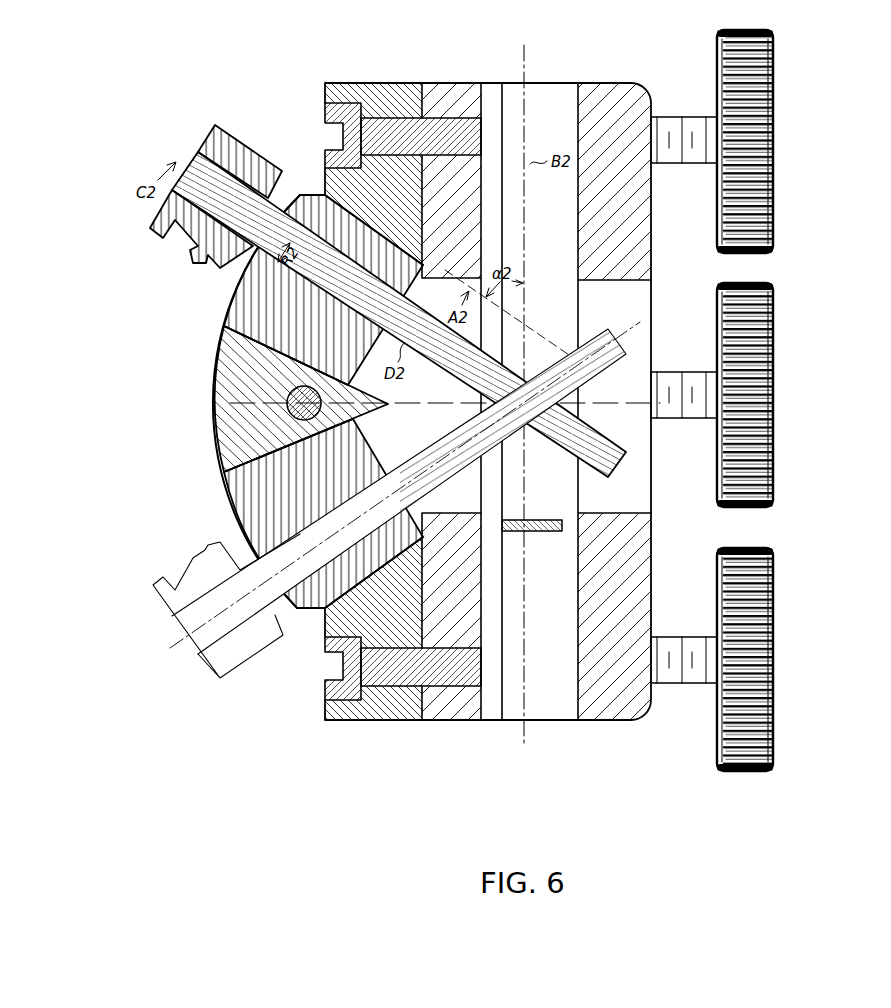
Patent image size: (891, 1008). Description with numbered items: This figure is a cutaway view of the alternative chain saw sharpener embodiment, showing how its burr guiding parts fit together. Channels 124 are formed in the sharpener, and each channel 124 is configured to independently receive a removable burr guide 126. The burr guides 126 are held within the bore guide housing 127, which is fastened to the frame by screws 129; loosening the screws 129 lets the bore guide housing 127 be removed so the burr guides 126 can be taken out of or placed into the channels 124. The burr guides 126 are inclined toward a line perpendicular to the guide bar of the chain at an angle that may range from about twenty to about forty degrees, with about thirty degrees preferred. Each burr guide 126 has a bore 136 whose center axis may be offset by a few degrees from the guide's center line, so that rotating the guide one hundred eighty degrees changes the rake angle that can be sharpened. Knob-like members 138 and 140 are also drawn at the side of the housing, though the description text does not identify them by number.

The channel 124 is at (301, 190).
The burr guide 126 is at (319, 324).
The bore guide housing 127 is at (205, 371).
The screw 129 is at (318, 112).
The bore 136 is at (228, 322).
The adjustment knob 138 is at (777, 385).
The locking knob 140 is at (776, 130).